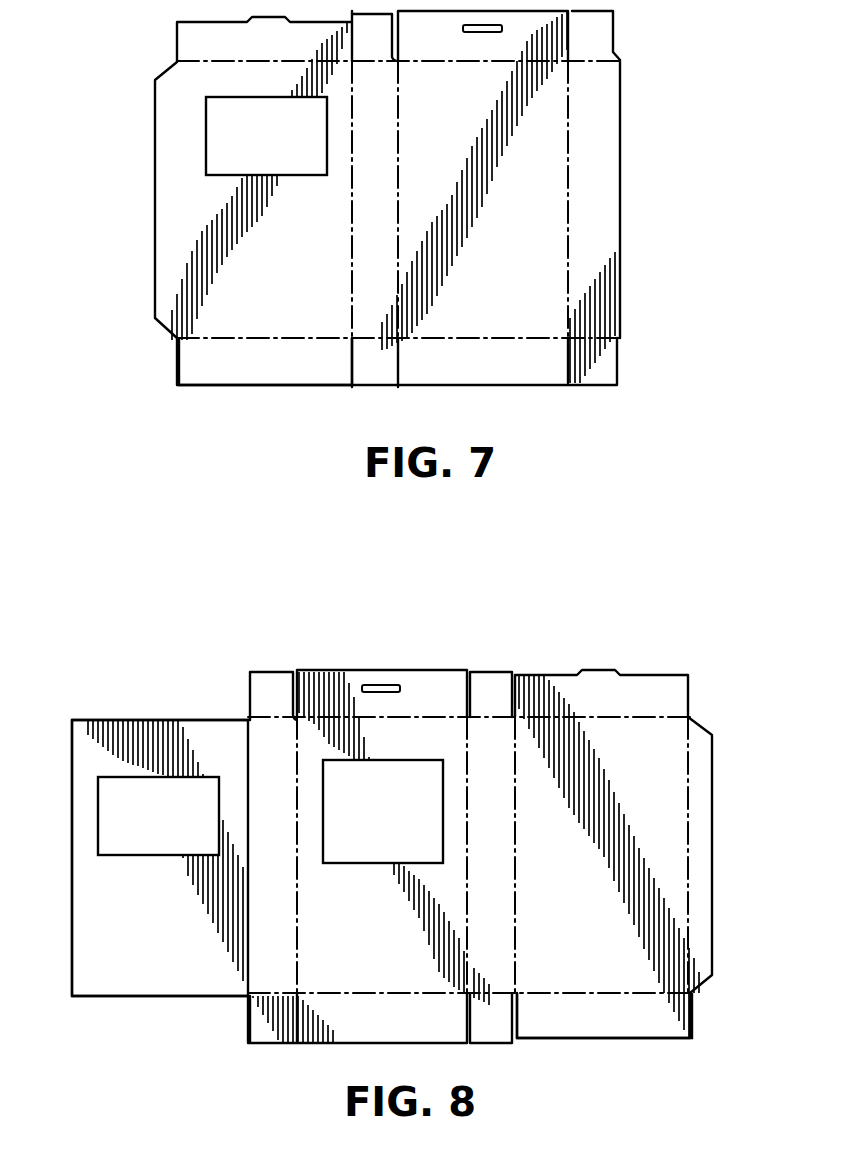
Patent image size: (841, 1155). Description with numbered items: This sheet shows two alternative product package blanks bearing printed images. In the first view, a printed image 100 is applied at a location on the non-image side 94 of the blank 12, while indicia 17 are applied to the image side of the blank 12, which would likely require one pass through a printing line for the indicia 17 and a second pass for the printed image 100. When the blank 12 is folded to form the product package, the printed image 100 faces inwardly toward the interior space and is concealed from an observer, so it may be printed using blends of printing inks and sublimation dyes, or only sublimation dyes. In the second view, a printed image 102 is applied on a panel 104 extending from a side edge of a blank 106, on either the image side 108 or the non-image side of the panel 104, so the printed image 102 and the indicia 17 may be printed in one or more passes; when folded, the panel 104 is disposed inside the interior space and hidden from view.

In FIG. 7, the carton blank 12 is at (620, 168).
In FIG. 7, the bottom panel 94 is at (297, 331).
In FIG. 7, the image 100 is at (234, 103).
In FIG. 8, the image 102 is at (110, 843).
In FIG. 8, the side panel 104 is at (138, 985).
In FIG. 8, the carton blank 106 is at (712, 845).
In FIG. 8, the bottom panel 108 is at (632, 982).
In FIG. 8, the indicia 17 is at (372, 850).